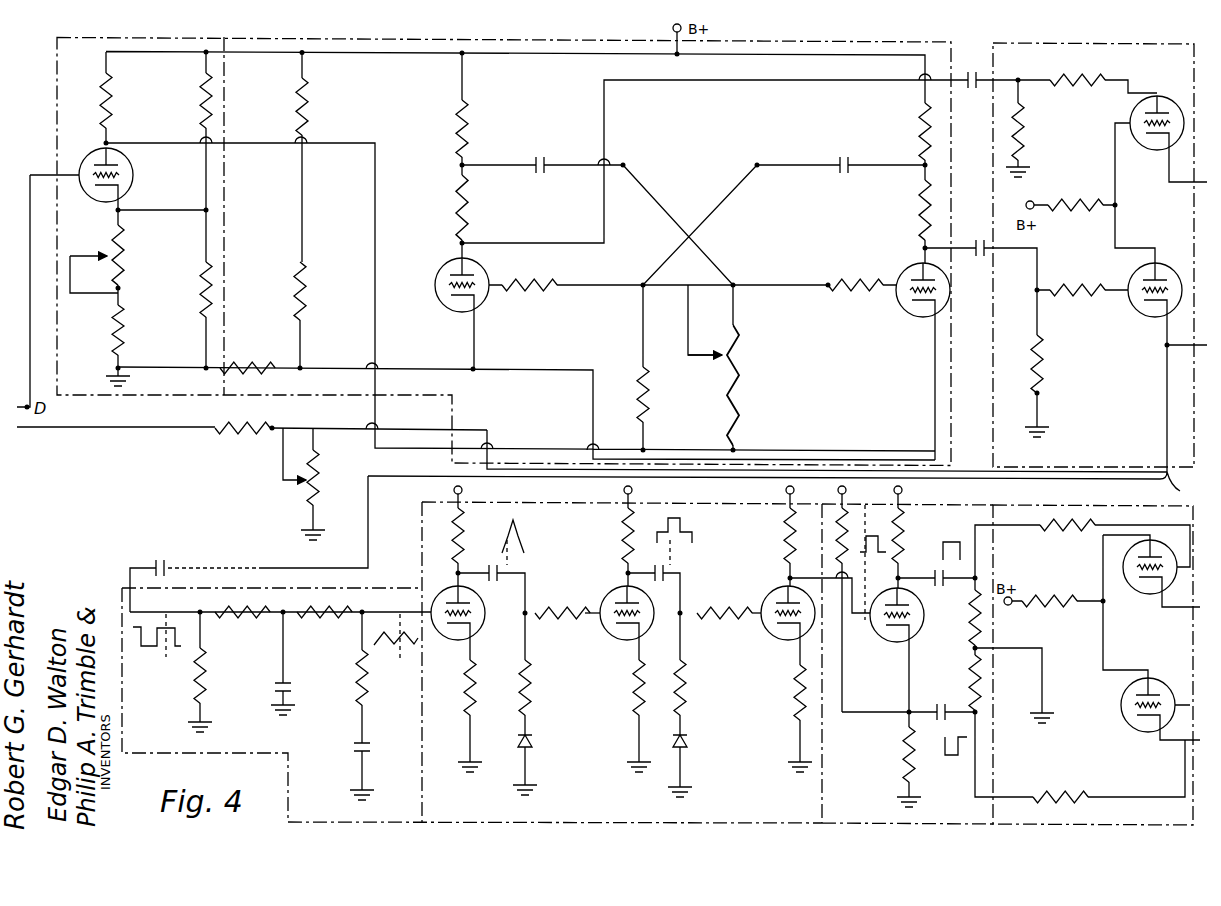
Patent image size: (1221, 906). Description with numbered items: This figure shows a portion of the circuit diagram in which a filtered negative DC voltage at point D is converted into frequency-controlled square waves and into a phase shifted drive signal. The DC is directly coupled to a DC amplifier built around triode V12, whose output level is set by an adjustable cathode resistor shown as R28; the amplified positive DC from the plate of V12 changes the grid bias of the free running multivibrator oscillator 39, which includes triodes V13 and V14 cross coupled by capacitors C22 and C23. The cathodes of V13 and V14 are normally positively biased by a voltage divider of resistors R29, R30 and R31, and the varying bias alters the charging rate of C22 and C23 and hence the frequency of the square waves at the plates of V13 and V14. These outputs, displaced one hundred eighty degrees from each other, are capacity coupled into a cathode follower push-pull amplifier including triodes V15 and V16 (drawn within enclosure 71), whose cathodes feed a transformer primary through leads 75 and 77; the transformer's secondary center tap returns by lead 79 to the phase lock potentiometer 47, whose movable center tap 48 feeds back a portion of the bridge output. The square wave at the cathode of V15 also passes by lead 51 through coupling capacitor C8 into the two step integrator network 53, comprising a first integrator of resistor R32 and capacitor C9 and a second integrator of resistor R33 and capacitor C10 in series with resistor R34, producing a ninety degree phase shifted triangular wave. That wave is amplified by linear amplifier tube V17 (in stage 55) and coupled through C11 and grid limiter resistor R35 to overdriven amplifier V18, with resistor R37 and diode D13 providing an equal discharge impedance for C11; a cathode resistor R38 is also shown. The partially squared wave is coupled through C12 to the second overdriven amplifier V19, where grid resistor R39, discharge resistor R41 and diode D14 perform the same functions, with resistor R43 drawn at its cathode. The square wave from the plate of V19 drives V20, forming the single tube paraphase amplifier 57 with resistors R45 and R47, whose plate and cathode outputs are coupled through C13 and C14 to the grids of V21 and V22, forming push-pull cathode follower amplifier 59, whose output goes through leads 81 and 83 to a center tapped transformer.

The free running multivibrator oscillator 39 is at (412, 37).
The output stage 71 is at (1059, 41).
The two step integrator network 53 is at (125, 585).
The pulse shaping stage 55 is at (424, 506).
The single tube paraphase amplifier 57 is at (953, 504).
The push-pull cathode follower amplifier 59 is at (1066, 505).
The resistor R29 is at (310, 108).
The resistor R30 is at (308, 290).
The triode V12 is at (135, 177).
The potentiometer R28 is at (126, 252).
The resistor R31 is at (248, 366).
The movable center tap 48 is at (300, 478).
The voltage divider potentiometer 47 is at (308, 500).
The triode V13 is at (486, 302).
The cross coupling capacitor C22 is at (546, 160).
The cross coupling capacitor C23 is at (838, 160).
The triode V14 is at (912, 312).
The triode V16 is at (1176, 104).
The lead 75 is at (1172, 186).
The triode V15 is at (1168, 268).
The lead 77 is at (1165, 348).
The lead 51 is at (265, 567).
The lead 79 is at (782, 492).
The coupling capacitor C8 is at (165, 562).
The resistor R32 is at (247, 618).
The capacitor C9 is at (292, 684).
The resistor R33 is at (326, 618).
The resistor R34 is at (370, 700).
The capacitor C10 is at (358, 748).
The tube V17 is at (452, 640).
The coupling capacitor C11 is at (488, 566).
The grid limiter resistor R35 is at (576, 620).
The resistor R37 is at (533, 689).
The diode D13 is at (533, 742).
The triode V18 is at (616, 598).
The resistor R38 is at (633, 690).
The coupling capacitor C12 is at (668, 573).
The grid resistor R39 is at (705, 613).
The discharge resistor R41 is at (690, 689).
The diode D14 is at (690, 742).
The tube V19 is at (776, 601).
The resistor R43 is at (795, 693).
The tube V20 is at (889, 641).
The coupling capacitor C13 is at (935, 572).
The resistor R45 is at (975, 626).
The resistor R47 is at (975, 680).
The coupling capacitor C14 is at (940, 704).
The tube V22 is at (1146, 594).
The lead 81 is at (1178, 609).
The tube V21 is at (1128, 718).
The lead 83 is at (1180, 746).